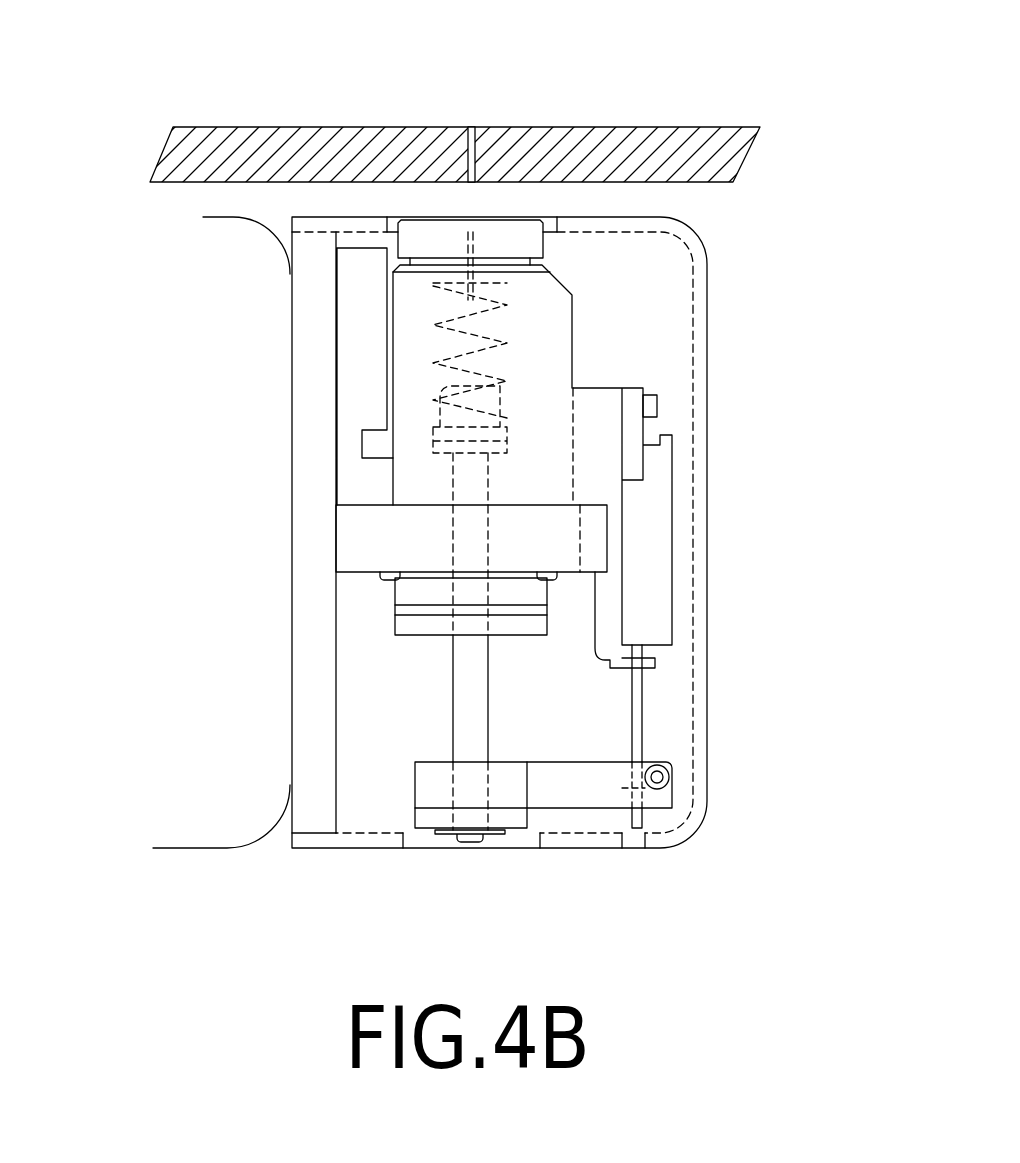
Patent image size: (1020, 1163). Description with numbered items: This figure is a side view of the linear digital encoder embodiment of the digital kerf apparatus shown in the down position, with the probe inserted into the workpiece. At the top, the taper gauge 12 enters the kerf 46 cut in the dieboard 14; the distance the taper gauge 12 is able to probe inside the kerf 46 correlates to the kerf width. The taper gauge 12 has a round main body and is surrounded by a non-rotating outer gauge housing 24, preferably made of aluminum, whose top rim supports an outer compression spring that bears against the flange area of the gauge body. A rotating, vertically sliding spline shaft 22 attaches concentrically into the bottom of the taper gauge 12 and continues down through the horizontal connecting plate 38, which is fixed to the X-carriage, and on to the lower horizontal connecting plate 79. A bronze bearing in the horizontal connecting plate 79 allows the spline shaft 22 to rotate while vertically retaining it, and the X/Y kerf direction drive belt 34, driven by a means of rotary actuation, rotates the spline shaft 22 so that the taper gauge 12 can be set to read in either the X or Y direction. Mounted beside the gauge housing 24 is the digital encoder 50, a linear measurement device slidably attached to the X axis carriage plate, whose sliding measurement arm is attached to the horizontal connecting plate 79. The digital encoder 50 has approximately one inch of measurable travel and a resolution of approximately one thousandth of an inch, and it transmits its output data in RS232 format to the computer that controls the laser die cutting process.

The dieboard 14 is at (340, 125).
The kerf 46 is at (472, 123).
The taper gauge 12 is at (477, 248).
The outer gauge housing 24 is at (577, 347).
The digital encoder 50 is at (673, 515).
The horizontal connecting plate 38 is at (427, 535).
The X/Y kerf direction drive belt 34 is at (428, 595).
The spline shaft 22 is at (490, 683).
The horizontal connecting plate 79 is at (565, 808).